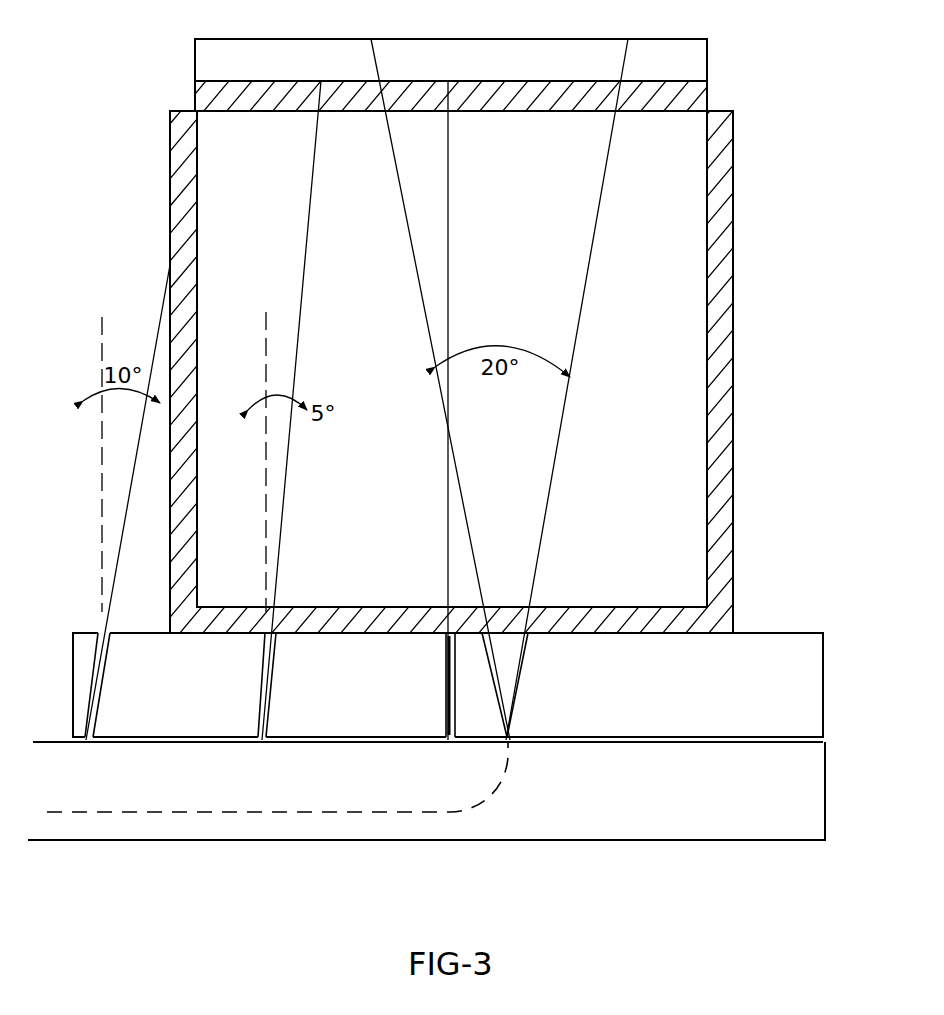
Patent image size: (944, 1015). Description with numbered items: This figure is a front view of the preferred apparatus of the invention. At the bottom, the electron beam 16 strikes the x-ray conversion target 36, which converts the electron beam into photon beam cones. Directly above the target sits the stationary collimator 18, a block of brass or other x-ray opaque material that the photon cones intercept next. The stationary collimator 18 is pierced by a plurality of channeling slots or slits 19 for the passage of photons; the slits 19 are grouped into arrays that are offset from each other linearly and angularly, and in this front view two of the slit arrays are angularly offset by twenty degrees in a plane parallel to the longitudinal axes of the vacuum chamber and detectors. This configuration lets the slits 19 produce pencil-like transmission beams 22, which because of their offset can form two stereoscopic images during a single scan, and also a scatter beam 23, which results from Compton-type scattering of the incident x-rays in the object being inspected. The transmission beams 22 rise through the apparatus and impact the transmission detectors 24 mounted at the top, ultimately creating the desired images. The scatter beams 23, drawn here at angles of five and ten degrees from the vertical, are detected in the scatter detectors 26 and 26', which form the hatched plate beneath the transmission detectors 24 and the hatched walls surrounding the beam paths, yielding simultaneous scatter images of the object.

The electron beam 16 is at (287, 812).
The stationary collimator 18 is at (770, 647).
The slits 19 is at (490, 683).
The pencil-like transmission beams 22 is at (422, 297).
The scatter beam 23 is at (157, 332).
The transmission detectors 24 is at (688, 60).
The scatter detector 26 is at (472, 357).
The scatter detector 26' is at (472, 357).
The x-ray conversion target 36 is at (795, 742).